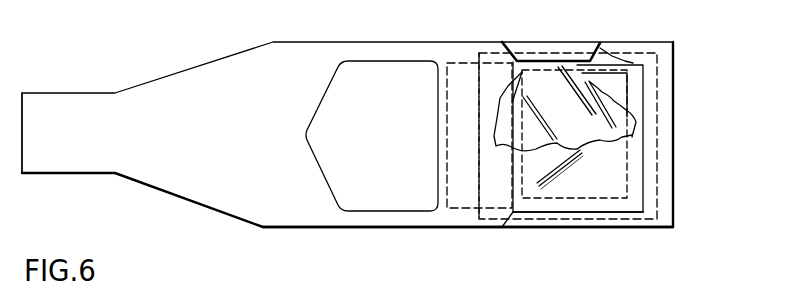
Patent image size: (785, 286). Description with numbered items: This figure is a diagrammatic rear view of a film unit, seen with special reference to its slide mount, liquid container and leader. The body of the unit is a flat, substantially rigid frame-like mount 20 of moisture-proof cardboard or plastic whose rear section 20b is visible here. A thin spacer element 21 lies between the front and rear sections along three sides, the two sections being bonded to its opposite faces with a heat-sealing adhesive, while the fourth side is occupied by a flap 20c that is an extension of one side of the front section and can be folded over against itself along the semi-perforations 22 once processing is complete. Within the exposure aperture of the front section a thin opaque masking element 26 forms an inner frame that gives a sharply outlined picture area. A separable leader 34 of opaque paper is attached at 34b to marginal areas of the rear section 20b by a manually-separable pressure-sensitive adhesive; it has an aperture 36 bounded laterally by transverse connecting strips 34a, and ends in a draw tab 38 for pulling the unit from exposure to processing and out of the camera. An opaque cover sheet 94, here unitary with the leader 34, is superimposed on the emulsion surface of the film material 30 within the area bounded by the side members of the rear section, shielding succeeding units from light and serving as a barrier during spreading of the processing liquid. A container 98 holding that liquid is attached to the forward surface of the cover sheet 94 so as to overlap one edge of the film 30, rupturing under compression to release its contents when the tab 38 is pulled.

The frame-like mount 20 is at (677, 115).
The rear section 20b is at (629, 53).
The flap 20c is at (454, 209).
The spacer element 21 is at (601, 47).
The semi-perforations 22 is at (467, 118).
The masking element 26 is at (641, 82).
The film material 30 is at (572, 114).
The leader 34 is at (249, 139).
The transverse connecting strips 34a is at (373, 224).
The attachment of leader 34b is at (493, 218).
The aperture 36 is at (331, 82).
The draw tab 38 is at (74, 174).
The cover sheet 94 is at (620, 170).
The container 98 is at (512, 103).